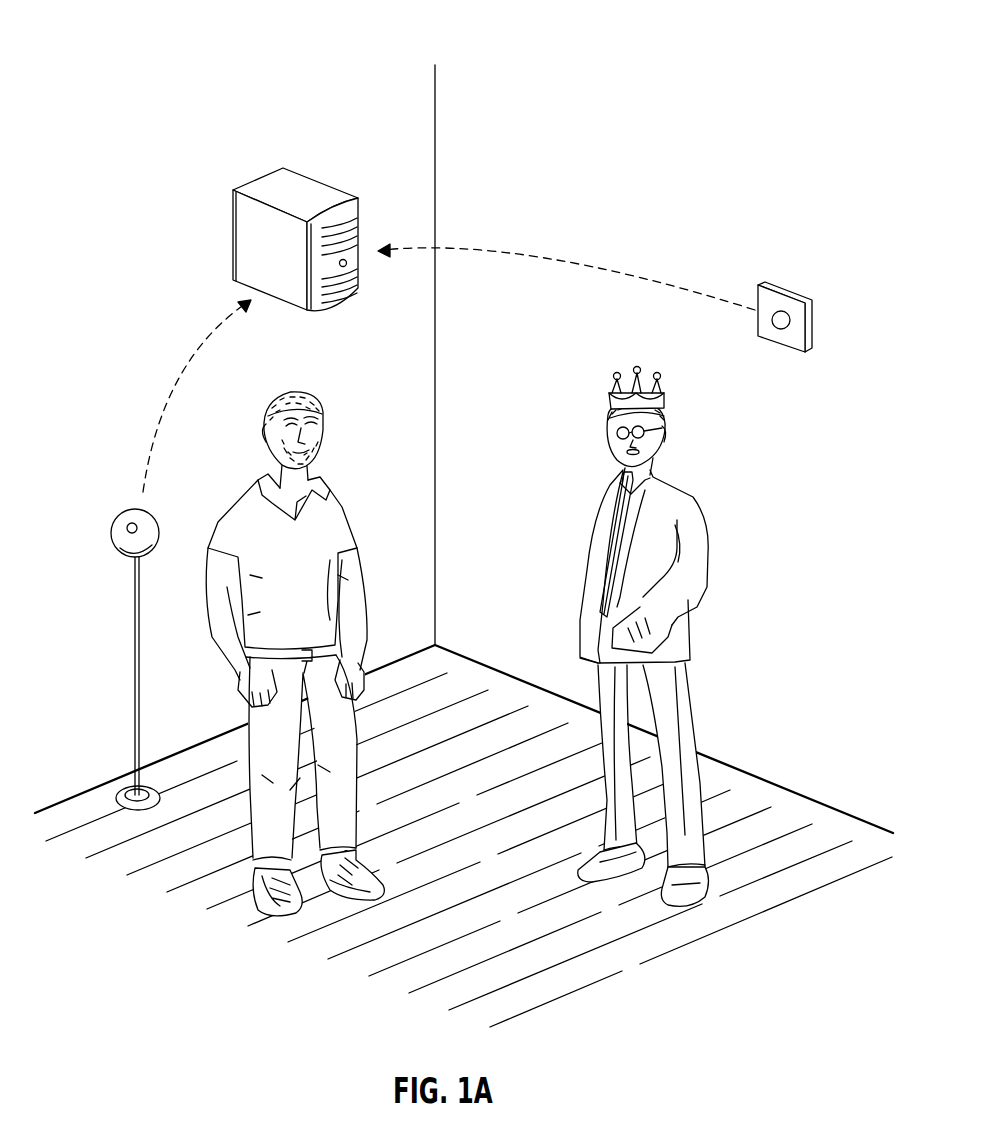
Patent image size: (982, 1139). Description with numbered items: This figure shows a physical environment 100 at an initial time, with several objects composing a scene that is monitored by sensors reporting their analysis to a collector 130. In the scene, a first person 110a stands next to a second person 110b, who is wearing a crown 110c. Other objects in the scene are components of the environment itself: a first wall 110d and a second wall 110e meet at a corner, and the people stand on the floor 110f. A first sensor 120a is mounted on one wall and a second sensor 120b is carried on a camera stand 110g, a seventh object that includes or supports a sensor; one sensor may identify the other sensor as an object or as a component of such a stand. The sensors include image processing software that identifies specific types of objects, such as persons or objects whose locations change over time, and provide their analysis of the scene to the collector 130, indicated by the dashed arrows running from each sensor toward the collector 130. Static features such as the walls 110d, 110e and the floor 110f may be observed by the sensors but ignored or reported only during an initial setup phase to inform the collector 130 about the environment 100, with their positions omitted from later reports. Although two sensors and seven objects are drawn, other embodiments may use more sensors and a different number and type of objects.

The physical environment 100 is at (738, 37).
The first person 110a is at (322, 440).
The second person 110b is at (695, 492).
The crown 110c is at (660, 402).
The first wall 110d is at (688, 162).
The second wall 110e is at (142, 180).
The floor 110f is at (505, 850).
The seventh object (camera stand) 110g is at (132, 665).
The first sensor 120a is at (795, 298).
The second sensor 120b is at (115, 520).
The collector 130 is at (301, 203).